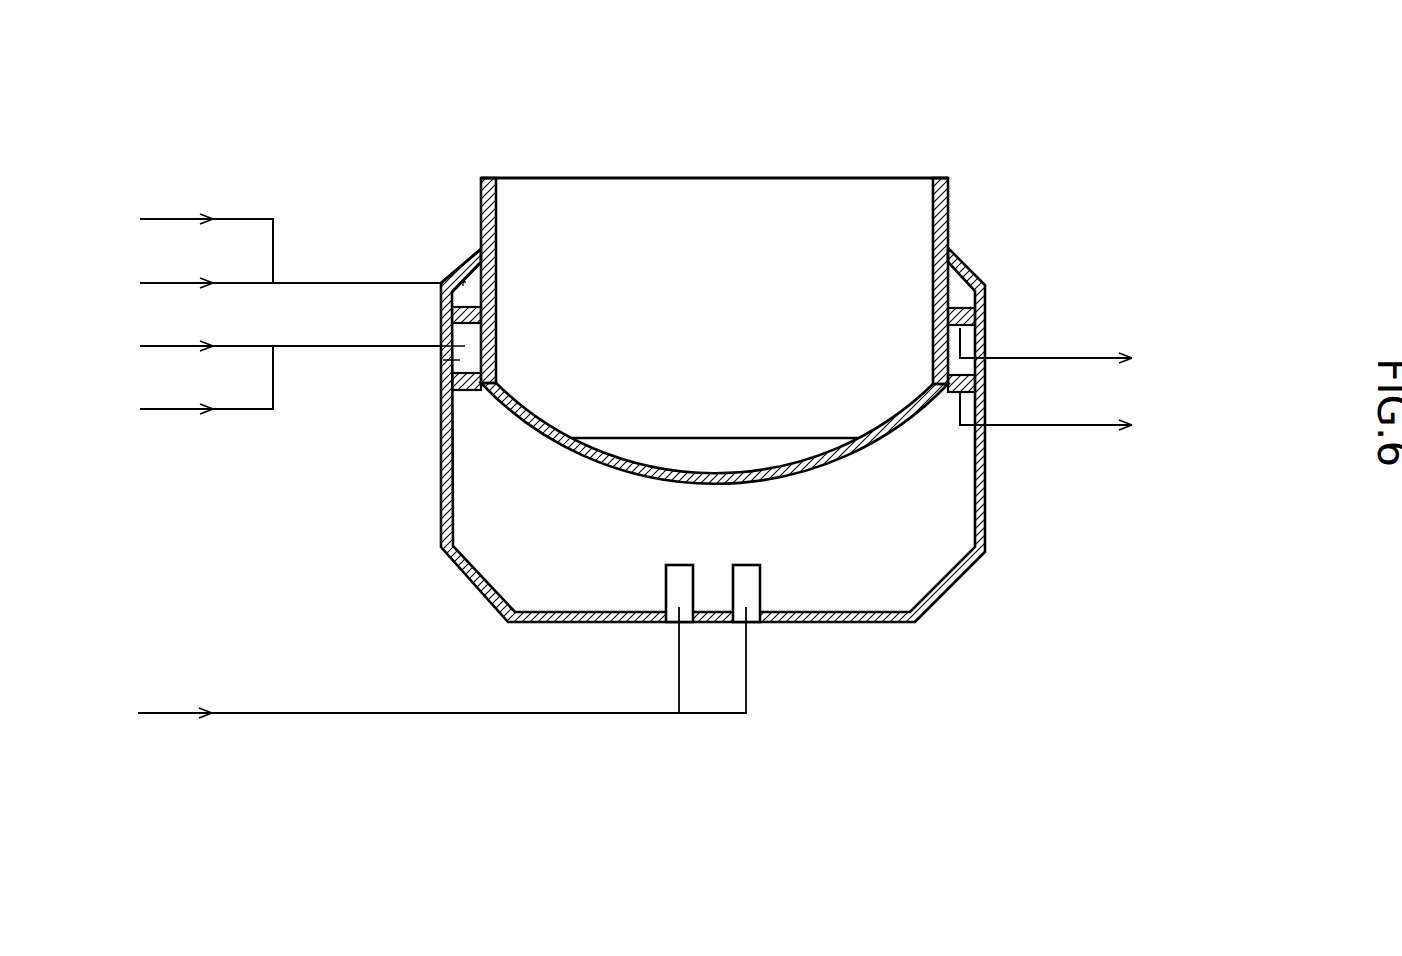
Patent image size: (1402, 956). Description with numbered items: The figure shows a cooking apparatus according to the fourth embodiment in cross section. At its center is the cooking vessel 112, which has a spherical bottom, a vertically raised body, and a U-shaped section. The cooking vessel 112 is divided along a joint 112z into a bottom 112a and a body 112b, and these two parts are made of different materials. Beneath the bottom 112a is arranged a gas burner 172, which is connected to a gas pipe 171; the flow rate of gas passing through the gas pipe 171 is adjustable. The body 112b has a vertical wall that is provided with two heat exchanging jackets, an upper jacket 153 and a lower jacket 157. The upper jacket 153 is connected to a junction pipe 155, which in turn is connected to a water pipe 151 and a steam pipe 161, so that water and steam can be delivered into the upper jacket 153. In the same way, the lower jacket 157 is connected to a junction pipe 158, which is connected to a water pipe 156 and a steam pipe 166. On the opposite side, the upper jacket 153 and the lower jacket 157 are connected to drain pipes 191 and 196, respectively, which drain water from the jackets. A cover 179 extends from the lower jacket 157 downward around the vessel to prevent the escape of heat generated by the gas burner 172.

The cooking vessel 112 is at (714, 267).
The bottom 112a is at (652, 466).
The body 112b is at (497, 203).
The joint 112z is at (578, 448).
The water pipe 151 is at (167, 219).
The steam pipe 161 is at (167, 283).
The water pipe 156 is at (167, 346).
The steam pipe 166 is at (167, 409).
The junction pipe 155 is at (320, 282).
The junction pipe 158 is at (317, 348).
The upper jacket 153 is at (452, 258).
The lower jacket 157 is at (441, 367).
The cover 179 is at (985, 480).
The drain pipe 191 is at (1077, 358).
The drain pipe 196 is at (1077, 425).
The gas pipe 171 is at (167, 710).
The gas burner 172 is at (678, 586).